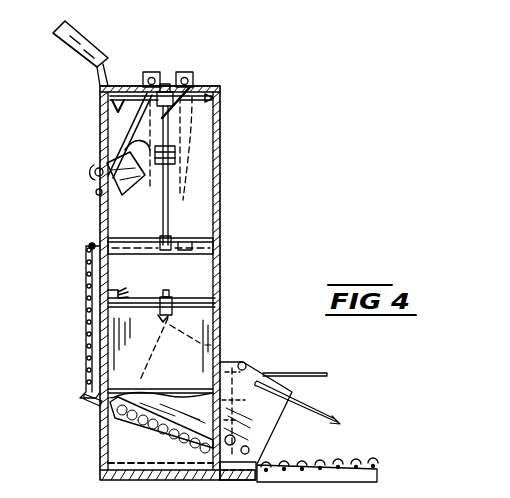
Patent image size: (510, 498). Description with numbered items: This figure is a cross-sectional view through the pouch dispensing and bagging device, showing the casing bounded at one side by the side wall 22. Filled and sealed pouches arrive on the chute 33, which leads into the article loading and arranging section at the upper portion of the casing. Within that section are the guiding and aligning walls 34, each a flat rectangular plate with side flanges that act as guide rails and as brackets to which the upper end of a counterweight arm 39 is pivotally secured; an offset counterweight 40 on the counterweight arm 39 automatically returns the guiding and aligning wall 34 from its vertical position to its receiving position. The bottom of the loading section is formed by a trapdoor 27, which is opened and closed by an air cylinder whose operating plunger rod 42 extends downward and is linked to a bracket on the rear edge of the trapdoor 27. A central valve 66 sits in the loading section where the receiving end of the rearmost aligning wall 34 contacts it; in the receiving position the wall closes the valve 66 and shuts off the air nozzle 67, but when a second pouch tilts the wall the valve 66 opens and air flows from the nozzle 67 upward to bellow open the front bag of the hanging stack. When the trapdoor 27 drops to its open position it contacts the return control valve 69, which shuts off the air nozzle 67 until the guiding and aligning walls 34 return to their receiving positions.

The side wall 22 is at (100, 226).
The trapdoor 27 is at (222, 247).
The chute 33 is at (82, 43).
The guiding and aligning wall 34 is at (193, 121).
The counterweight arm 39 is at (108, 106).
The offset counterweight 40 is at (93, 170).
The operating plunger rod 42 is at (160, 182).
The central valve 66 is at (112, 83).
The air nozzle 67 is at (165, 302).
The return control valve 69 is at (110, 295).